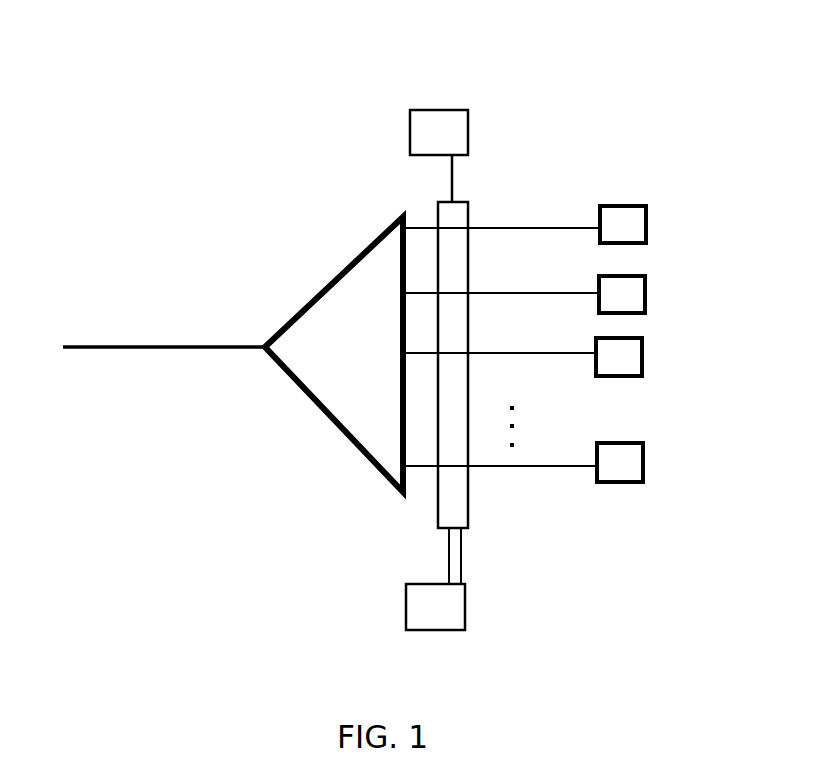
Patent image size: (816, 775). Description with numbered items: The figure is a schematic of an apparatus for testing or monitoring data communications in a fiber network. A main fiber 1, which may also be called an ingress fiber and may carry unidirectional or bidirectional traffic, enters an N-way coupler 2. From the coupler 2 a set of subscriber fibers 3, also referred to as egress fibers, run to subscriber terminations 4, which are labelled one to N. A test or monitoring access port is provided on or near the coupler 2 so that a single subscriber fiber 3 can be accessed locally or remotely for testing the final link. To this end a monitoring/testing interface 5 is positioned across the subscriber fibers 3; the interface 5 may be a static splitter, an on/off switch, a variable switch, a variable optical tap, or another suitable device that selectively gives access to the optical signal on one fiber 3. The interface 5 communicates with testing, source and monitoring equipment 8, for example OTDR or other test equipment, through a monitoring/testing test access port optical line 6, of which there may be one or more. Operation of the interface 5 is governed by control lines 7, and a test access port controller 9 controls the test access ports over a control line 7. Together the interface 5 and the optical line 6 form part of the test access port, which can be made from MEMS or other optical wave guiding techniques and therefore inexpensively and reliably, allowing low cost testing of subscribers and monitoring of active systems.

The main fiber 1 is at (158, 337).
The coupler 2 is at (312, 278).
The subscriber fibers 3 is at (553, 218).
The subscriber terminations 4 is at (627, 190).
The monitoring/testing interface 5 is at (483, 510).
The monitoring/testing test access port optical line 6 is at (435, 565).
The control lines 7 is at (433, 183).
The testing, source and monitoring equipment 8 is at (395, 607).
The test access port controller 9 is at (445, 92).